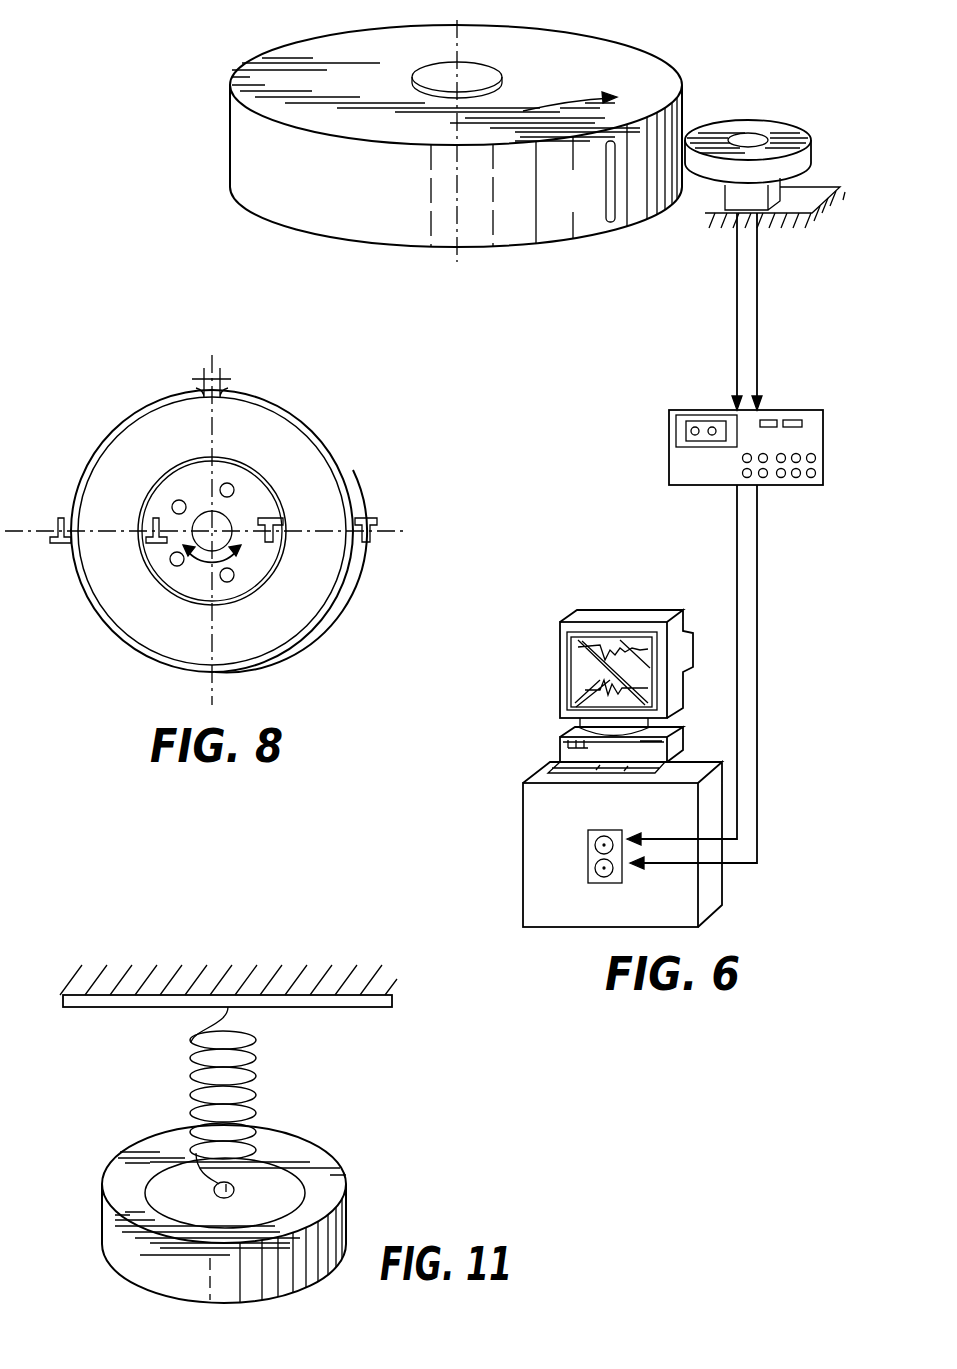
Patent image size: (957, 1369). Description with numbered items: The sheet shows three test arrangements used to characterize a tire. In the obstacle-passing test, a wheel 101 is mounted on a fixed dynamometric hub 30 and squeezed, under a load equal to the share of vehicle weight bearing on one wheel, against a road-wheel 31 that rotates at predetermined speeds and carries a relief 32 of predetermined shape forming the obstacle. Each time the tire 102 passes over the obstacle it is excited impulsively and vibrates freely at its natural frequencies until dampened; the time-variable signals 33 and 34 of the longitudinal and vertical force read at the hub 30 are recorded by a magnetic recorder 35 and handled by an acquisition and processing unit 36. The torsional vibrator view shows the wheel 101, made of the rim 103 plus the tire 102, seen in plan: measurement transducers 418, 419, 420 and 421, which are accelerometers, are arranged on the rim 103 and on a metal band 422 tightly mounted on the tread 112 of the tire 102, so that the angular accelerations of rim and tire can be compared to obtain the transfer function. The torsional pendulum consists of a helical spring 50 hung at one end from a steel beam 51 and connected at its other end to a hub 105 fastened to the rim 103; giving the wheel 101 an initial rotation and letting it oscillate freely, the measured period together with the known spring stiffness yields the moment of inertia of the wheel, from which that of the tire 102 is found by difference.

In FIG. 6, the road-wheel 31 is at (624, 57).
In FIG. 6, the relief 32 is at (606, 185).
In FIG. 6, the wheel 101 is at (758, 113).
In FIG. 8, the wheel 101 is at (150, 657).
In FIG. 11, the wheel 101 is at (114, 1146).
In FIG. 6, the tire 102 is at (800, 140).
In FIG. 8, the tire 102 is at (116, 612).
In FIG. 11, the tire 102 is at (345, 1193).
In FIG. 6, the dynamometric hub 30 is at (706, 213).
In FIG. 6, the signal 33 is at (737, 327).
In FIG. 6, the signal 34 is at (757, 327).
In FIG. 6, the magnetic recorder 35 is at (669, 457).
In FIG. 6, the acquisition and processing unit 36 is at (626, 612).
In FIG. 8, the tread 112 is at (150, 416).
In FIG. 8, the rim 103 is at (245, 483).
In FIG. 11, the rim 103 is at (280, 1178).
In FIG. 8, the metal band 422 is at (343, 478).
In FIG. 8, the measurement transducer 419 is at (275, 518).
In FIG. 8, the measurement transducer 421 is at (372, 518).
In FIG. 8, the measurement transducer 420 is at (57, 546).
In FIG. 8, the measurement transducer 418 is at (153, 546).
In FIG. 11, the steel beam 51 is at (321, 1007).
In FIG. 11, the helical spring 50 is at (257, 1079).
In FIG. 11, the hub 105 is at (234, 1191).